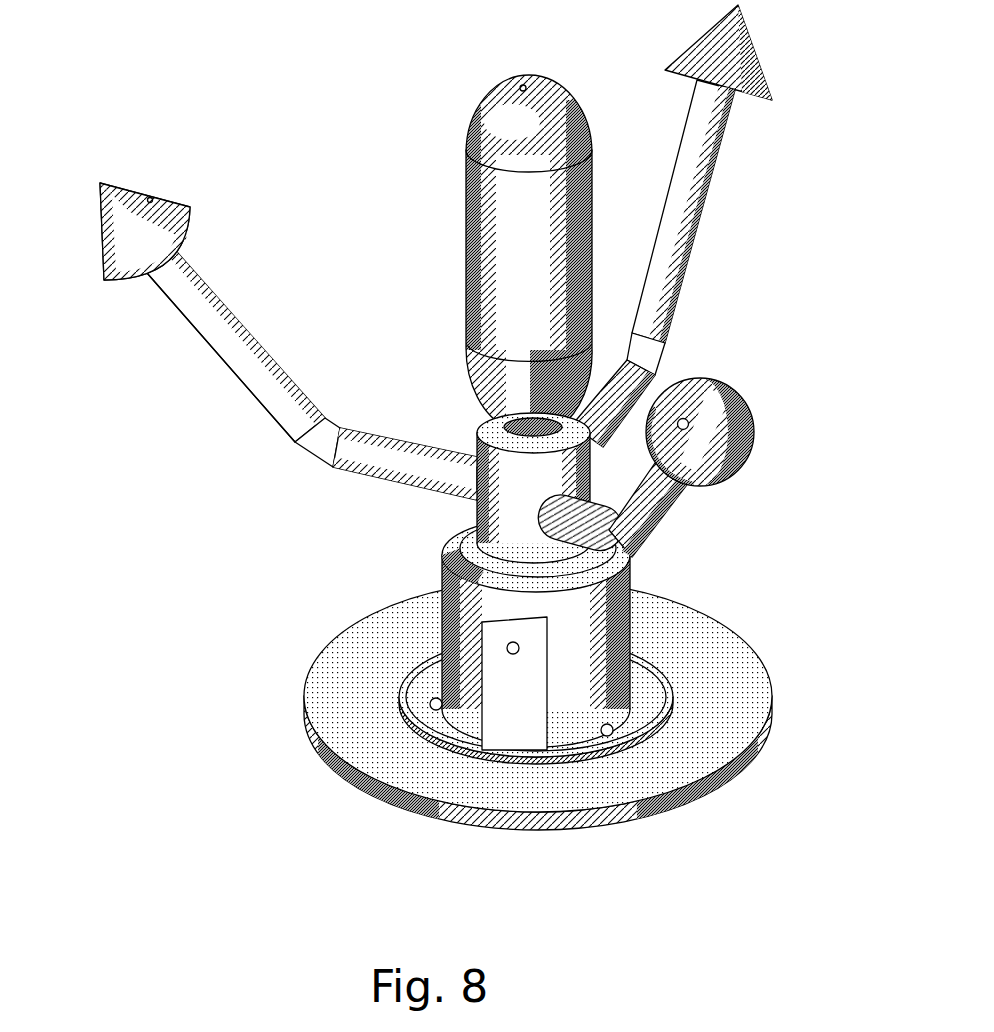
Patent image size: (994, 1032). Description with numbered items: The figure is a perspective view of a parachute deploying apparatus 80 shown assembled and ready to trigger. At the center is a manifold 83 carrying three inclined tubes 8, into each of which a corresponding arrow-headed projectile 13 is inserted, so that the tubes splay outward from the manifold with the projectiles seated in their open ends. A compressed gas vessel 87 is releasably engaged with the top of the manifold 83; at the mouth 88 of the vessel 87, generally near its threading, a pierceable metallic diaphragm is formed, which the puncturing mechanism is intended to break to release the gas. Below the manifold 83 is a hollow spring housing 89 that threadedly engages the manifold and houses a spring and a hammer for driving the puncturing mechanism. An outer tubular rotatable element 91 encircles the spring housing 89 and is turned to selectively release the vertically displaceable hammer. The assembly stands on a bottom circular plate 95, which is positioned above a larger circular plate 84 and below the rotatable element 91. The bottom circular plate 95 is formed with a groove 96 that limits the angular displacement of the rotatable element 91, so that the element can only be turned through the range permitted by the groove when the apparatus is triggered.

The parachute deploying apparatus 80 is at (329, 120).
The arrow-headed projectile 13 is at (160, 195).
The inclined tube 8 is at (213, 290).
The compressed gas vessel 87 is at (465, 192).
The mouth 88 is at (510, 427).
The manifold 83 is at (477, 448).
The hollow spring housing 89 is at (490, 552).
The outer tubular rotatable element 91 is at (448, 607).
The bottom circular plate 95 is at (417, 677).
The larger circular plate 84 is at (323, 684).
The groove 96 is at (607, 736).